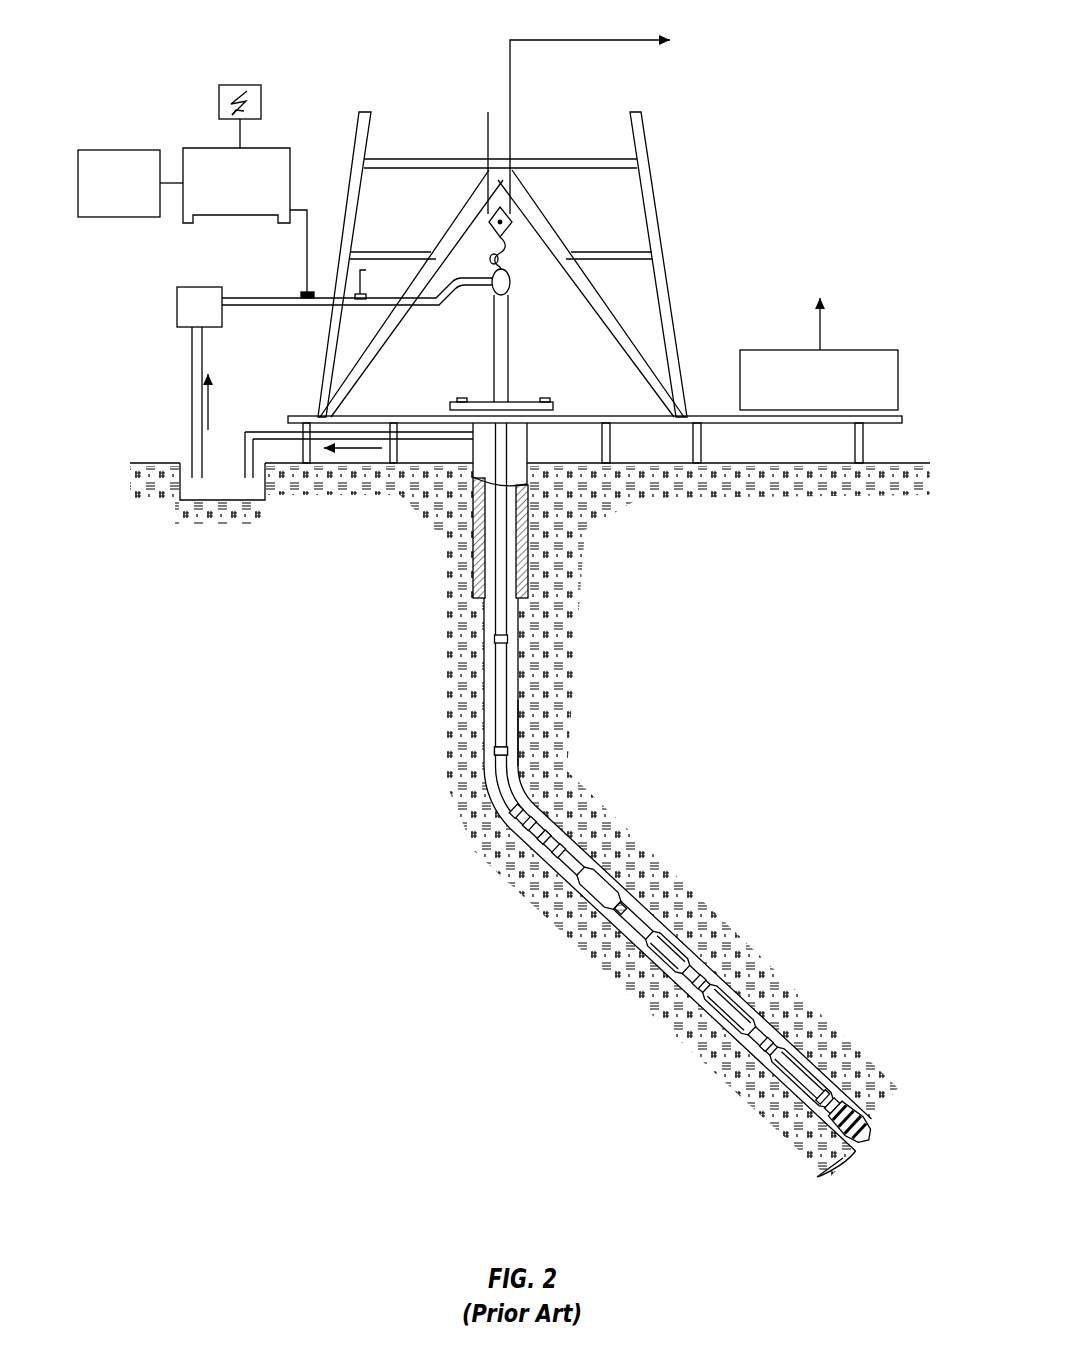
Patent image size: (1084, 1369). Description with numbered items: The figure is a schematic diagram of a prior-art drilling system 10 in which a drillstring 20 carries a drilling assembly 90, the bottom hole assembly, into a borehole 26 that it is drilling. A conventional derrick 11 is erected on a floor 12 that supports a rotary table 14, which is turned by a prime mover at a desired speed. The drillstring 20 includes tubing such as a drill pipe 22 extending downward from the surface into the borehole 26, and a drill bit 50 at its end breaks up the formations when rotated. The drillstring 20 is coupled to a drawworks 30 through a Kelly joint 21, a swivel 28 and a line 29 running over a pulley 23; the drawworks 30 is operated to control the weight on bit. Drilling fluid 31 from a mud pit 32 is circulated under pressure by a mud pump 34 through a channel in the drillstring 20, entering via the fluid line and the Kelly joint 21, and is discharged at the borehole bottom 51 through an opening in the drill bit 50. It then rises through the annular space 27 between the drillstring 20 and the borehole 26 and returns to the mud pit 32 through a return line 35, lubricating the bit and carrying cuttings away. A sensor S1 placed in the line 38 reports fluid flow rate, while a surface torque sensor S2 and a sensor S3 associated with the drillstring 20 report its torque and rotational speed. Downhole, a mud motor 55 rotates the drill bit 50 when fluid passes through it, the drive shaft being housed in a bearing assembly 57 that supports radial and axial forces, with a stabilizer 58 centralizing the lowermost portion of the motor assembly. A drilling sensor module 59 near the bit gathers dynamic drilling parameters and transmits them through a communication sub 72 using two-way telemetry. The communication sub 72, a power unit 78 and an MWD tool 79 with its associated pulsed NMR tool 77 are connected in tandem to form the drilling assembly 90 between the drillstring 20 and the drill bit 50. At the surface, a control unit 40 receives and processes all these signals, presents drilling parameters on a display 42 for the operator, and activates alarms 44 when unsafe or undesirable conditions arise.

The drilling system 10 is at (416, 62).
The derrick 11 is at (516, 264).
The floor 12 is at (595, 403).
The rotary table 14 is at (515, 378).
The drillstring 20 is at (519, 690).
The Kelly joint 21 is at (530, 348).
The drill pipe 22 is at (622, 767).
The pulley 23 is at (507, 229).
The borehole 26 is at (562, 738).
The annular space 27 is at (647, 911).
The swivel 28 is at (476, 304).
The line 29 is at (633, 123).
The drawworks 30 is at (835, 353).
The drilling fluid 31 is at (198, 505).
The mud pit 32 is at (222, 481).
The mud pump 34 is at (174, 297).
The return line 35 is at (359, 496).
The line 38 is at (309, 378).
The surface control unit 40 is at (231, 195).
The display/monitor 42 is at (259, 89).
The alarms 44 is at (130, 200).
The drill bit 50 is at (872, 1116).
The borehole bottom 51 is at (821, 1187).
The mud motor 55 is at (709, 965).
The bearing assembly 57 is at (829, 1072).
The stabilizer 58 is at (855, 1074).
The drilling sensor module 59 is at (785, 1123).
The communication sub 72 is at (456, 759).
The pulsed NMR tool 77 is at (586, 894).
The power unit 78 is at (518, 818).
The MWD tool 79 is at (531, 839).
The drilling assembly 90 is at (738, 861).
The sensor S1 is at (377, 281).
The surface torque sensor S2 is at (568, 393).
The sensor S3 is at (438, 388).